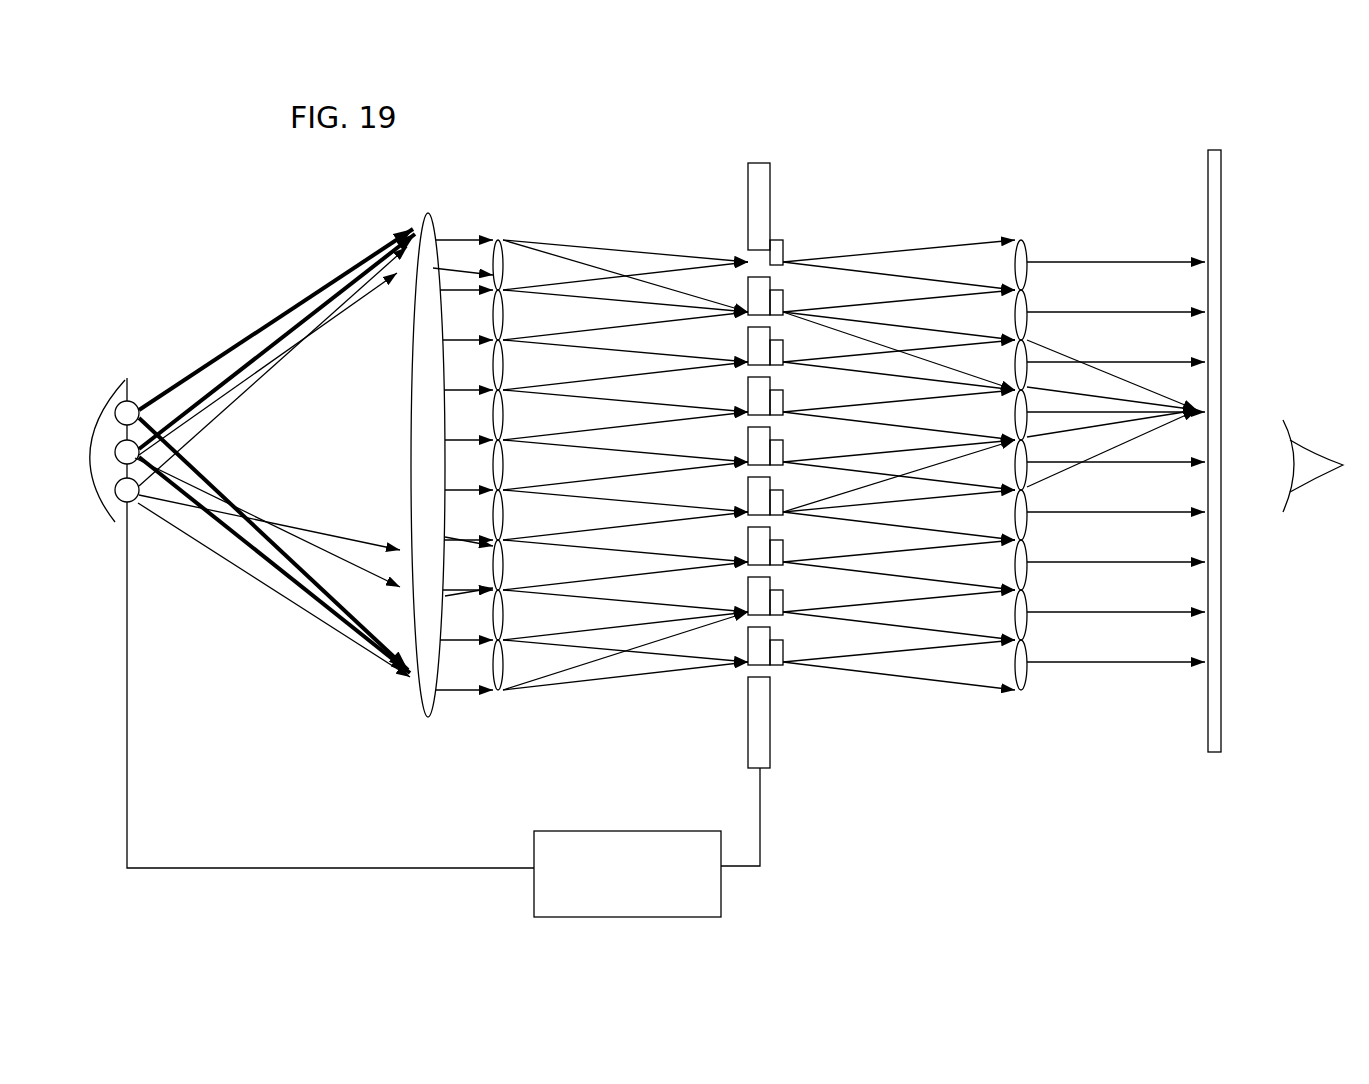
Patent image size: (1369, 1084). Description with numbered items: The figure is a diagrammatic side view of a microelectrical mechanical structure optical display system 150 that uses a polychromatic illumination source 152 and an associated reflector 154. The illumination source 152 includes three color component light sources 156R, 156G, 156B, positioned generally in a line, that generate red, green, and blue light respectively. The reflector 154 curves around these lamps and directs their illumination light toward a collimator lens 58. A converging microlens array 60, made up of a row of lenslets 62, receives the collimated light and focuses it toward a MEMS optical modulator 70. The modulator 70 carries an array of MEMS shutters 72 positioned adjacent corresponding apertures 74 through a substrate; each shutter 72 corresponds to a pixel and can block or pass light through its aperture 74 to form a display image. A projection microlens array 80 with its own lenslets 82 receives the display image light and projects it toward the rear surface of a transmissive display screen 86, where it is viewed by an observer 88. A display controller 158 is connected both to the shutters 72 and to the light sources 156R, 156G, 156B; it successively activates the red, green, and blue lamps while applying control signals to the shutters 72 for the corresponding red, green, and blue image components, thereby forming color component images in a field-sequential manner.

The MEMS optical display system 150 is at (985, 124).
The polychromatic illumination source 152 is at (210, 447).
The reflector 154 is at (122, 392).
The red color component light source 156R is at (131, 401).
The green color component light source 156G is at (140, 457).
The blue color component light source 156B is at (120, 501).
The collimator lens 58 is at (413, 335).
The converging microlens array 60 is at (507, 708).
The lenslets 62 is at (506, 298).
The MEMS optical modulator 70 is at (765, 476).
The MEMS shutters 72 is at (784, 240).
The apertures 74 is at (746, 312).
The projection microlens array 80 is at (1020, 706).
The lenslets 82 is at (1030, 255).
The transmissive display screen 86 is at (1213, 753).
The observer 88 is at (1306, 436).
The display controller 158 is at (720, 882).